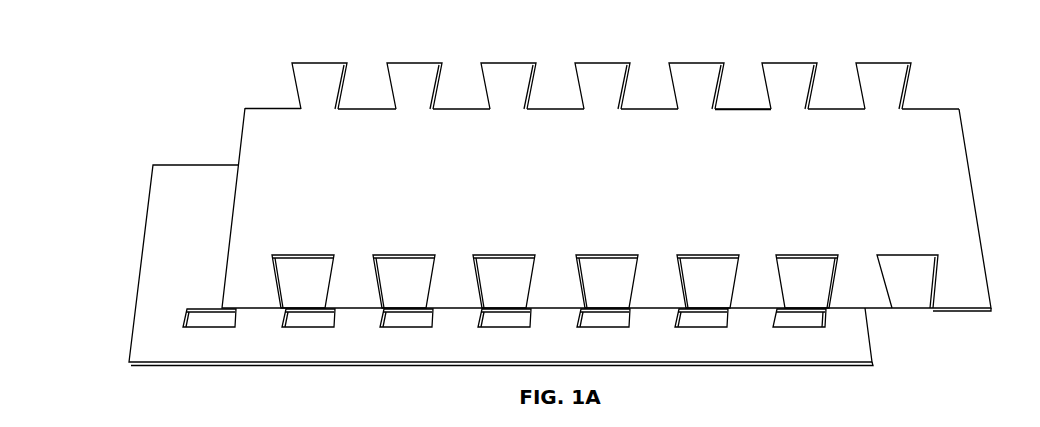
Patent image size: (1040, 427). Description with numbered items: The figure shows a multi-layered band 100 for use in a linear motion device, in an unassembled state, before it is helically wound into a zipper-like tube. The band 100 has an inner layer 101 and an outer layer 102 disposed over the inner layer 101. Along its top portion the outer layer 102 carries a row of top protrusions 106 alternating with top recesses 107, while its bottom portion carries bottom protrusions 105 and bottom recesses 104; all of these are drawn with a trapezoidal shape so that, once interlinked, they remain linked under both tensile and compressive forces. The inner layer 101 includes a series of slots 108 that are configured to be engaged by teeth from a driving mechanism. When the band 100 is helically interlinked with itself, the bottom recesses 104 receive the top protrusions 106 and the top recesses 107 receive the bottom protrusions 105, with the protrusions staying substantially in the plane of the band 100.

The band 100 is at (212, 60).
The inner layer 101 is at (178, 175).
The outer layer 102 is at (942, 175).
The bottom recesses 104 is at (913, 276).
The bottom protrusions 105 is at (872, 282).
The top protrusions 106 is at (802, 87).
The top recesses 107 is at (743, 87).
The slots 108 is at (196, 311).